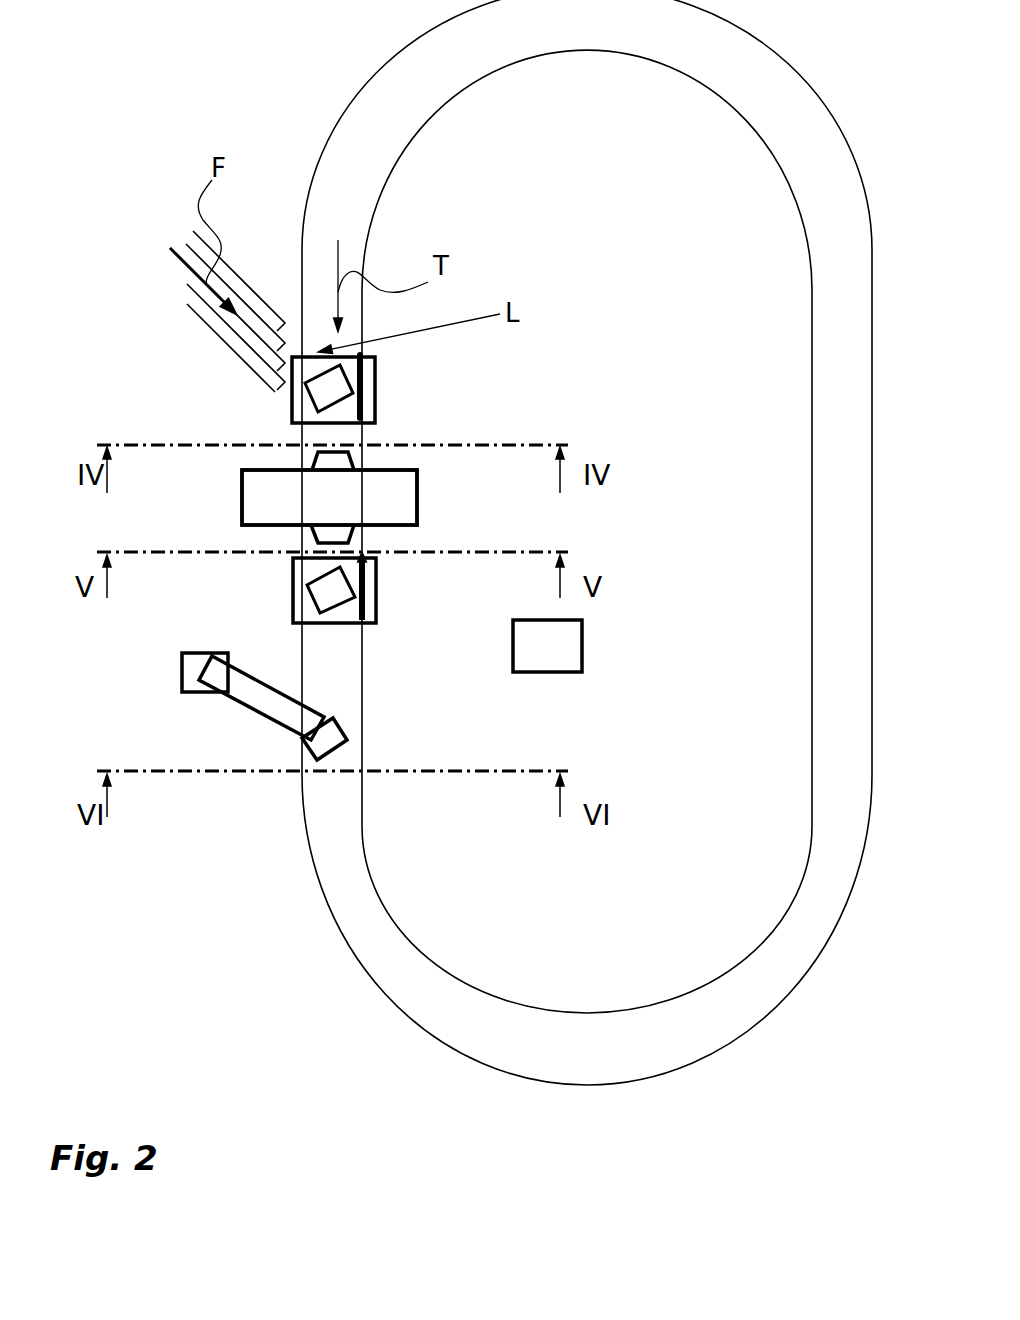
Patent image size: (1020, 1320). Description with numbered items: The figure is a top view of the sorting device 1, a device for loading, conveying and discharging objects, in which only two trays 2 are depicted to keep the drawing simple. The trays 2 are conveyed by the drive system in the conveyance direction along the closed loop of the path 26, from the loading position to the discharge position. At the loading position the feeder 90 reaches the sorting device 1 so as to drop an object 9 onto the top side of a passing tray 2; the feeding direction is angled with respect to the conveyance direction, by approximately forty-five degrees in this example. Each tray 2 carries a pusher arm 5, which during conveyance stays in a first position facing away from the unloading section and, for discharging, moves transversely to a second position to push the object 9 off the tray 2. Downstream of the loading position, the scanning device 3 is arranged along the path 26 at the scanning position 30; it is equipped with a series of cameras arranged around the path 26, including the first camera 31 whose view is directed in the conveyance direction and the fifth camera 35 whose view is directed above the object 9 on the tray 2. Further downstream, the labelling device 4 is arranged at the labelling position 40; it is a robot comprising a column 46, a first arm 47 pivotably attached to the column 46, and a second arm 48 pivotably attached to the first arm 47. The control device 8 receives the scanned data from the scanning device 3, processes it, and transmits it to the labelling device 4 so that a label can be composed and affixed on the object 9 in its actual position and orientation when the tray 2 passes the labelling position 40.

The sorting device 1 is at (384, 1096).
The path 26 is at (373, 117).
The feeder 90 is at (237, 283).
The object 9 is at (305, 383).
The tray 2 is at (305, 418).
The pusher arm 5 is at (363, 377).
The scanning position 30 is at (216, 502).
The scanning device 3 is at (400, 502).
The first camera 31 is at (333, 467).
The fifth camera 35 is at (332, 533).
The labelling position 40 is at (362, 673).
The labelling device 4 is at (293, 672).
The column 46 is at (190, 660).
The first arm 47 is at (255, 702).
The second arm 48 is at (325, 738).
The control device 8 is at (565, 652).